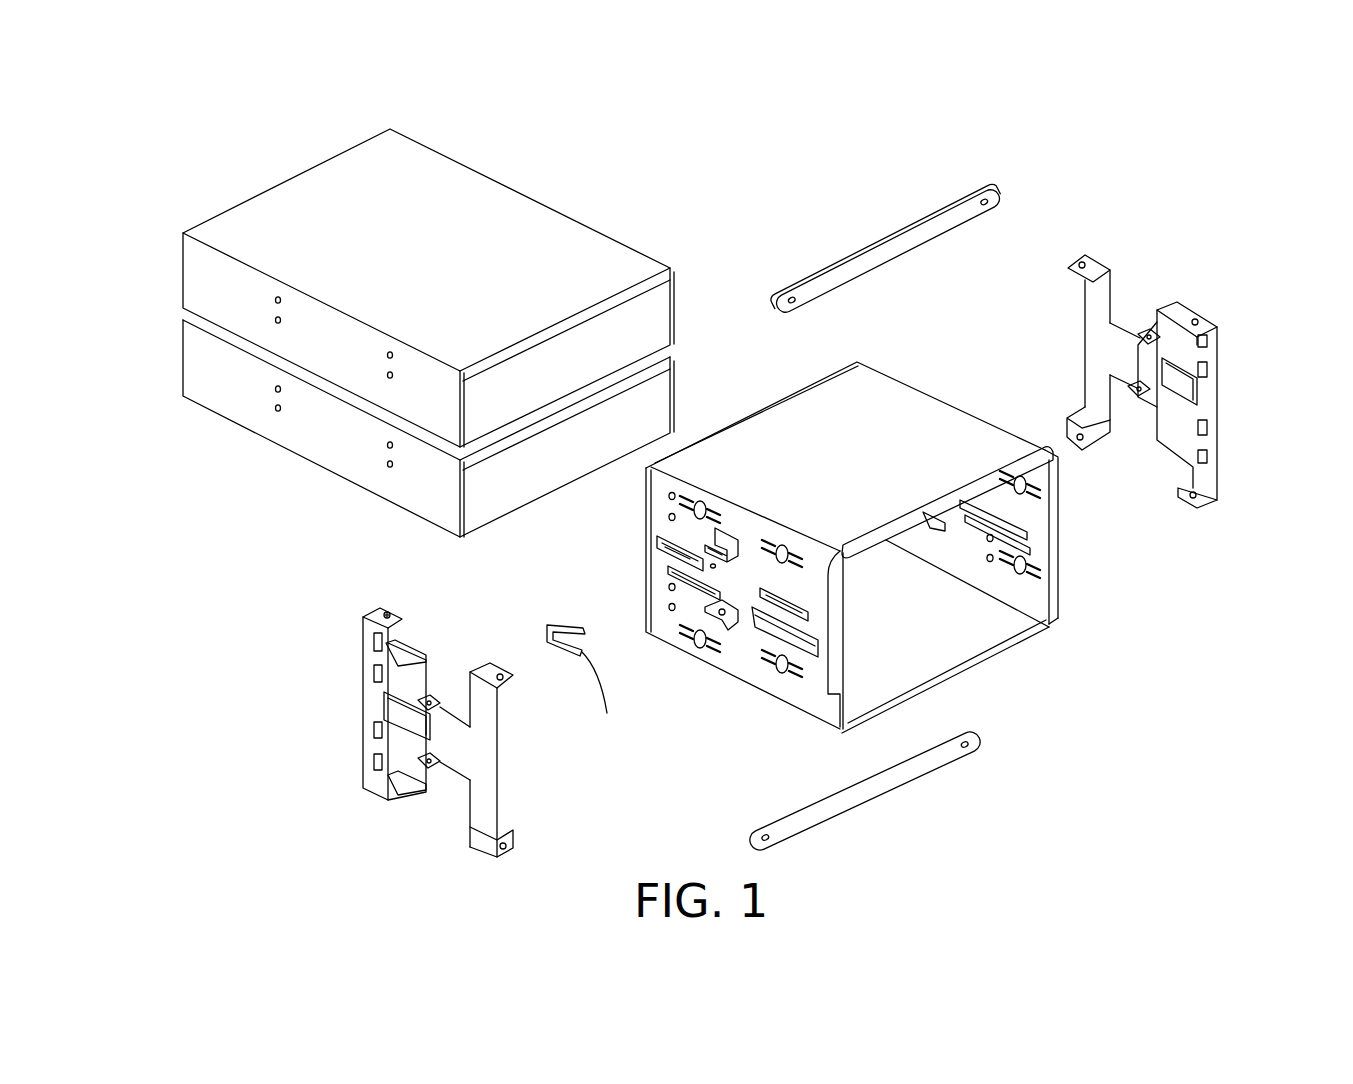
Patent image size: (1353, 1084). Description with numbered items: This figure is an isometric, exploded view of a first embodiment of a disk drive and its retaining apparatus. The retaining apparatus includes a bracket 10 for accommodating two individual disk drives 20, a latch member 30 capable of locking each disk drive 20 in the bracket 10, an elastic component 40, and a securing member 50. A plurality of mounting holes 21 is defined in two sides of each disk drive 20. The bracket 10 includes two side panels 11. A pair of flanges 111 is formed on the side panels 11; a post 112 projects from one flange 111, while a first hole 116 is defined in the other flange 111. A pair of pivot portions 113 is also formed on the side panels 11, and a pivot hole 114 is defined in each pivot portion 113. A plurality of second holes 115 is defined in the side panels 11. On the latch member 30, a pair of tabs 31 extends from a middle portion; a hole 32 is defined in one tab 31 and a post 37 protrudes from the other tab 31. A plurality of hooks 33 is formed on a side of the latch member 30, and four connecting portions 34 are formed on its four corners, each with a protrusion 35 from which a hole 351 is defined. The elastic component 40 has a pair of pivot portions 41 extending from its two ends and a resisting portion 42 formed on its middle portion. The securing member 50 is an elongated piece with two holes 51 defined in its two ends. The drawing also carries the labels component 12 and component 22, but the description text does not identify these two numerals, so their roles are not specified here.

The bracket 10 is at (848, 551).
The side panels 11 is at (830, 628).
The second side plate 12 is at (1033, 592).
The flanges 111 is at (723, 627).
The post 112 is at (722, 628).
The pivot portions 113 is at (700, 588).
The pivot hole 114 is at (668, 565).
The second holes 115 is at (668, 497).
The first hole 116 is at (708, 548).
The disk drive 20 is at (394, 341).
The mounting holes 21 is at (278, 320).
The second storage device 22 is at (390, 464).
The latch member 30 is at (758, 544).
The tabs 31 is at (782, 567).
The hole 32 is at (427, 770).
The hooks 33 is at (375, 733).
The connecting portions 34 is at (487, 668).
The protrusion 35 is at (744, 466).
The hole 351 is at (388, 617).
The post 37 is at (430, 700).
The elastic component 40 is at (569, 671).
The pivot portions 41 is at (565, 660).
The resisting portion 42 is at (547, 627).
The securing member 50 is at (892, 253).
The holes 51 is at (963, 738).